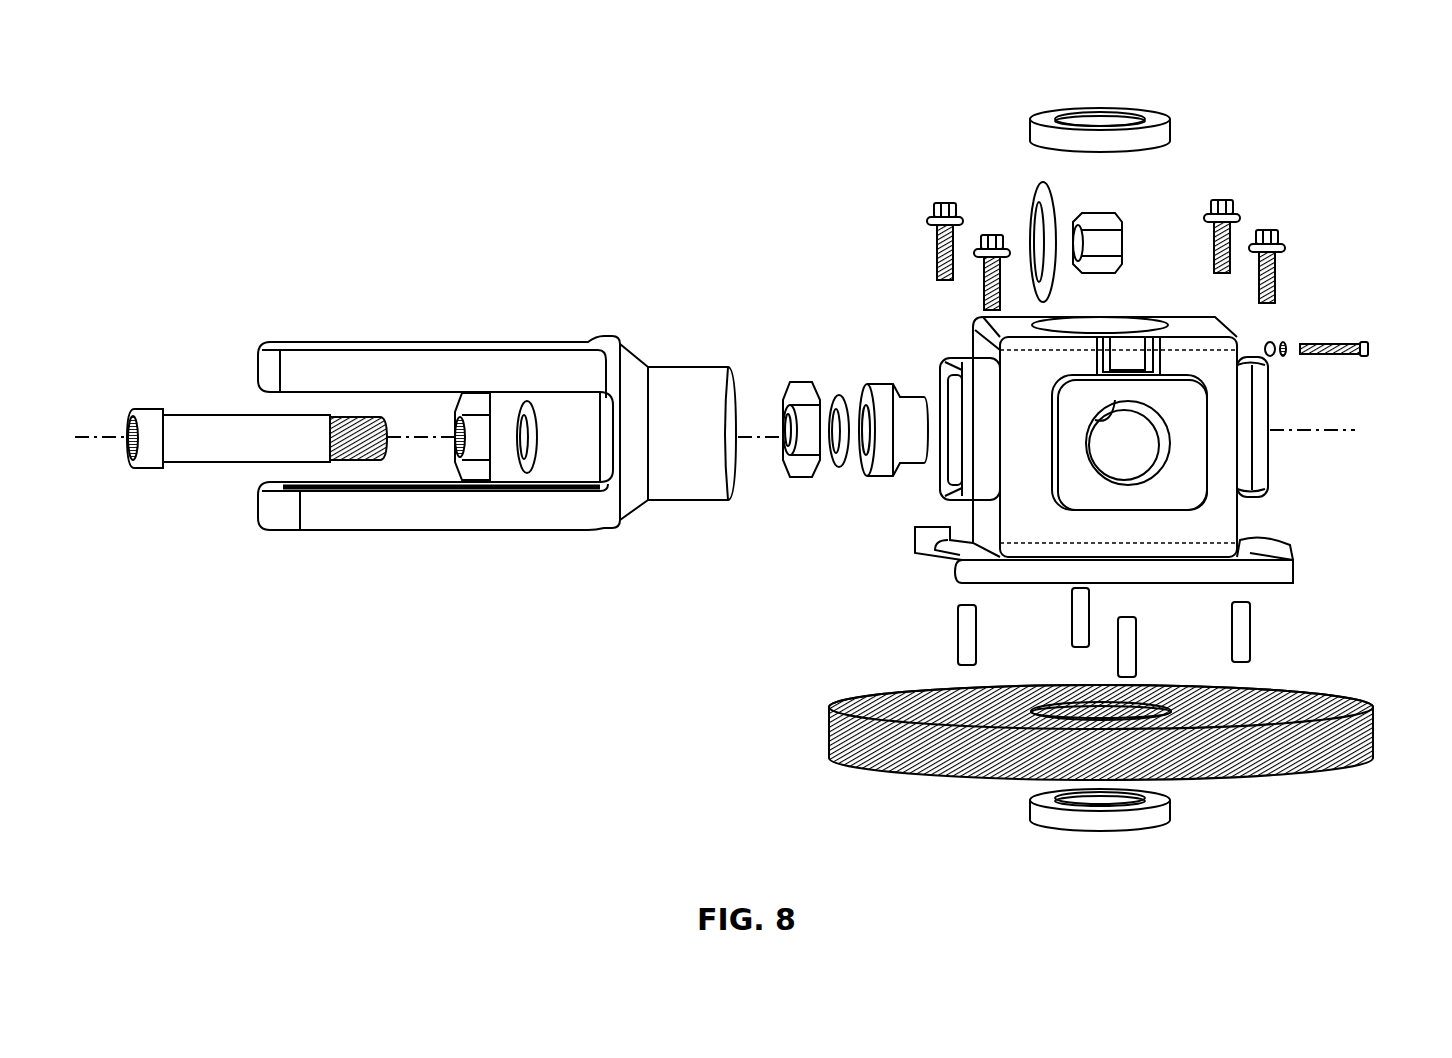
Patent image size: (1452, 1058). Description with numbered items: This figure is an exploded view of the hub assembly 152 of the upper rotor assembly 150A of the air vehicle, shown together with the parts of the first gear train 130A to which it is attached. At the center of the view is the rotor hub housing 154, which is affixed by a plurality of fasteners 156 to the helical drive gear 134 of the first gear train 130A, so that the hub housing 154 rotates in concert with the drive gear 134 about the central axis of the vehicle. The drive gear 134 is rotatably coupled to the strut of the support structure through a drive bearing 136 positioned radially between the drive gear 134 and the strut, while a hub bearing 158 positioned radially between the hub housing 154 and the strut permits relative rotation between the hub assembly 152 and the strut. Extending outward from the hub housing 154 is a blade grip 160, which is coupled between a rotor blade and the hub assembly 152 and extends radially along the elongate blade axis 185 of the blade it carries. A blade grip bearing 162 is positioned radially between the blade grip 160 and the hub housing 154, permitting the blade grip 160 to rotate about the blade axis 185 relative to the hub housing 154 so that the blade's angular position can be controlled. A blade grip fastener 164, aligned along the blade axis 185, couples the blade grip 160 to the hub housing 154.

The upper rotor assembly 150A is at (312, 92).
The blade axis 185 is at (76, 437).
The blade grip fastener 164 is at (197, 430).
The blade grip 160 is at (680, 382).
The blade grip bearing 162 is at (805, 393).
The rotor hub assembly 152 is at (1168, 497).
The rotor hub housing 154 is at (1256, 455).
The hub bearing 158 is at (1148, 112).
The fasteners 156 is at (945, 203).
The first gear train 130A is at (752, 725).
The helical drive gear 134 is at (1362, 757).
The drive bearing 136 is at (1160, 810).